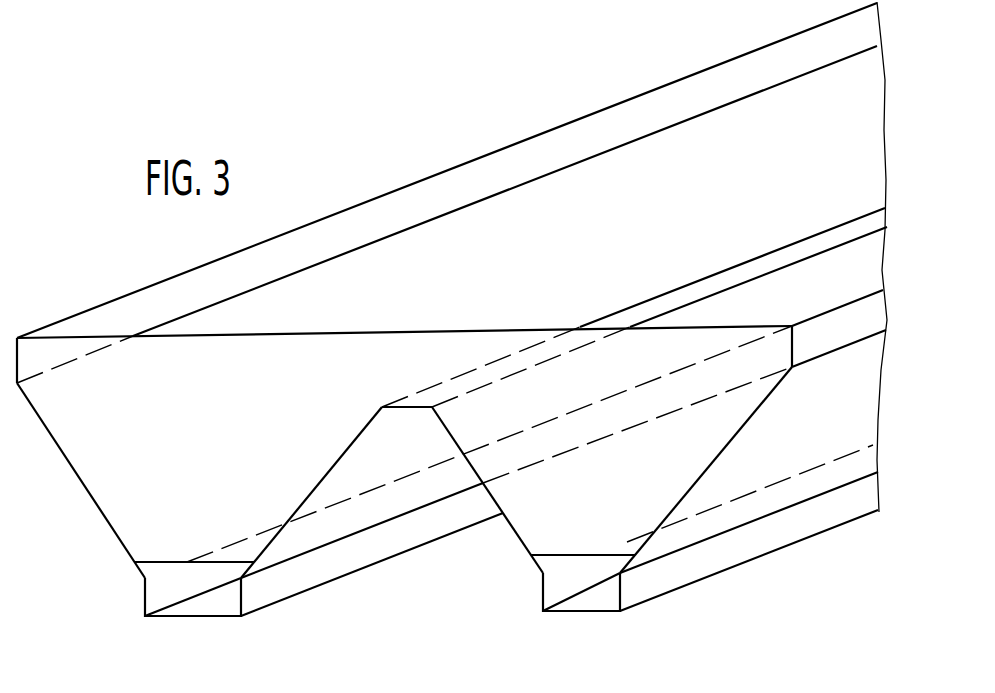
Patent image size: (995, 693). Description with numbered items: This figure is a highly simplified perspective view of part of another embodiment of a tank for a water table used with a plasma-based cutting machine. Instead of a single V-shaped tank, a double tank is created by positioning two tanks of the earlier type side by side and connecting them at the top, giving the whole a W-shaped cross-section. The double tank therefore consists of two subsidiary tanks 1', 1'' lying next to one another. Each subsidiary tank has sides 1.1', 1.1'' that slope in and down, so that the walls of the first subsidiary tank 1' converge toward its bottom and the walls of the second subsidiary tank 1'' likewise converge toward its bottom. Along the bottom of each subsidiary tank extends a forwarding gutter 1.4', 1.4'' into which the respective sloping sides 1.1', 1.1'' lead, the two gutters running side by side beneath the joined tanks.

The subsidiary tank 1' is at (66, 455).
The subsidiary tank 1'' is at (731, 472).
The sides 1.1' is at (199, 480).
The sides 1.1'' is at (616, 470).
The forwarding gutter 1.4' is at (318, 578).
The forwarding gutter 1.4'' is at (704, 571).